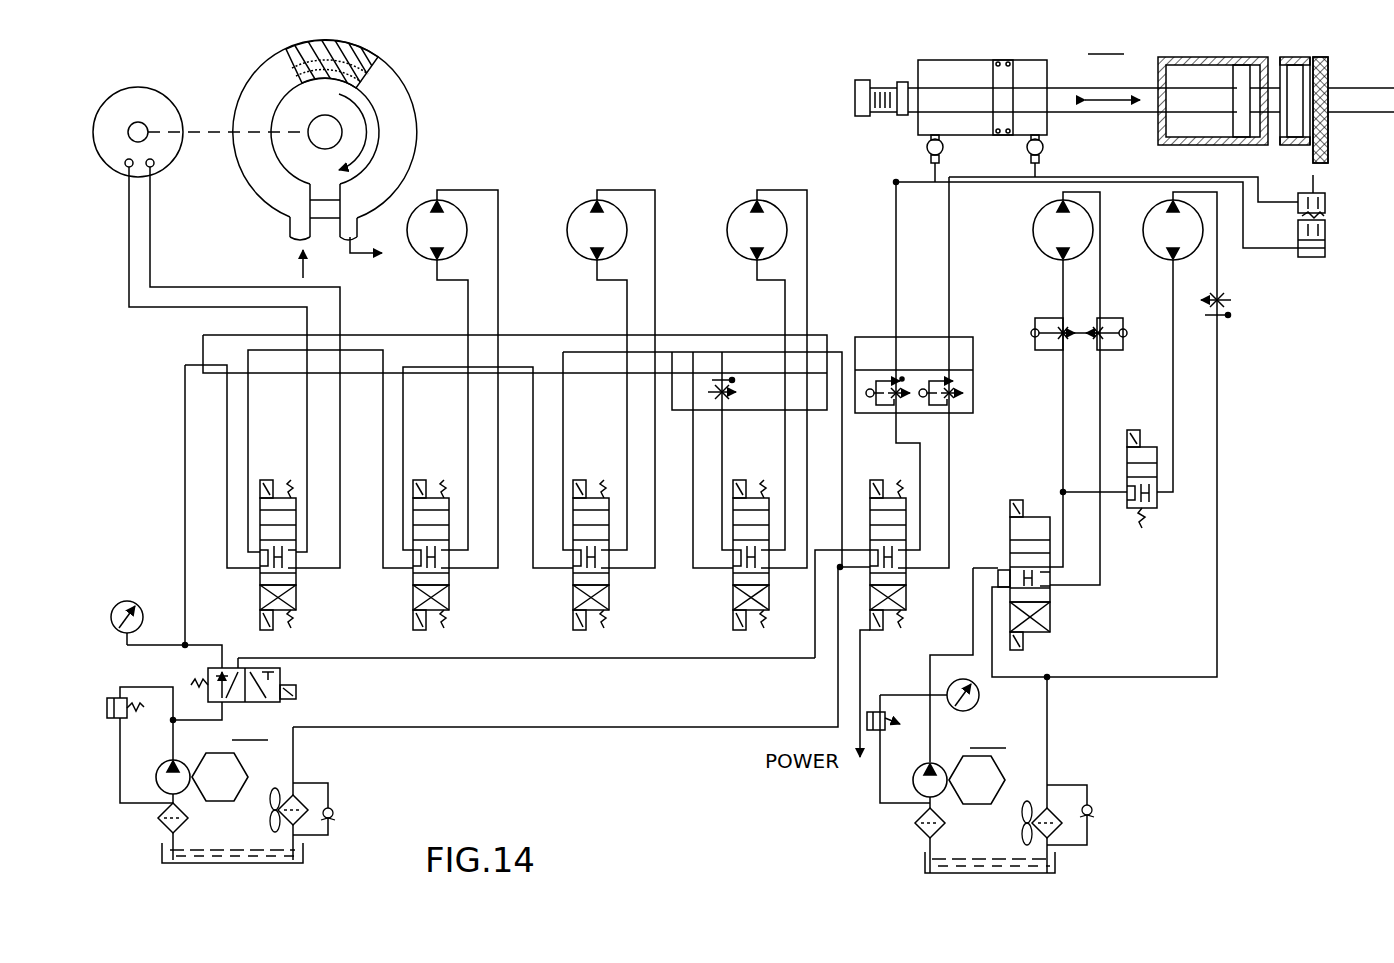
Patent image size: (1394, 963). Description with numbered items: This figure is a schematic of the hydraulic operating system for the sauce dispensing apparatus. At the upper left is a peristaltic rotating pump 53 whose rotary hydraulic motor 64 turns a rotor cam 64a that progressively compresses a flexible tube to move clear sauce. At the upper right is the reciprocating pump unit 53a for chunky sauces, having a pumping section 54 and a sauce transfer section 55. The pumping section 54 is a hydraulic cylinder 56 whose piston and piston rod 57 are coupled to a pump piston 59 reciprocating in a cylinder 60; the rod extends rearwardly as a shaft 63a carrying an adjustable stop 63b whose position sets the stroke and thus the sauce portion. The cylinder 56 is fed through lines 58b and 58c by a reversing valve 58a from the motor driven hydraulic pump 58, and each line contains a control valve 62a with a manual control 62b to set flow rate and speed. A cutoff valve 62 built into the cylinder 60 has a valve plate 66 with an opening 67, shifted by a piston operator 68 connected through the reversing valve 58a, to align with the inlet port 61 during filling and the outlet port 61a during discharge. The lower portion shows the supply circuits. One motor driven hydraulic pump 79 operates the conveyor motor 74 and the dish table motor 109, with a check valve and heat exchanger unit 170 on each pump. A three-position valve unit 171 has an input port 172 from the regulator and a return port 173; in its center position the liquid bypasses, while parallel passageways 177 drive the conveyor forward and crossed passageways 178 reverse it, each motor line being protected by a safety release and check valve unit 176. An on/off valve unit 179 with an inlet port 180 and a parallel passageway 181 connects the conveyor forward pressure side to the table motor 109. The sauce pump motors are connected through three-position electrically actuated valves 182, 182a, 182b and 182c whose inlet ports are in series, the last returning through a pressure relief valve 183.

The peristaltic rotating pump 53 is at (325, 136).
The pump unit 53a is at (1102, 137).
The pumping section 54 is at (1028, 58).
The sauce transfer section 55 is at (1170, 140).
The hydraulic cylinder 56 is at (1048, 70).
The piston and piston rod 57 is at (1057, 102).
The motor driven hydraulic pump 58 is at (557, 732).
The reversing valve 58a is at (903, 602).
The hydraulic line 58b is at (932, 158).
The hydraulic line 58c is at (1042, 164).
The pump piston 59 is at (1244, 138).
The cylinder 60 is at (1180, 57).
The sauce pump inlet port 61 is at (1267, 82).
The pump outlet port 61a is at (1293, 92).
The cutoff valve 62 is at (1318, 144).
The control valve 62a is at (926, 148).
The manual control 62b is at (945, 154).
The shaft 63a is at (864, 82).
The adjustable stop 63b is at (902, 81).
The rotary hydraulic motor 64 is at (117, 173).
The rotor cam 64a is at (296, 95).
The valve plate 66 is at (1322, 58).
The opening 67 is at (1326, 110).
The piston operator 68 is at (1296, 212).
The conveyor motor 74 is at (1040, 254).
The motor driven hydraulic pump 79 is at (910, 811).
The dish table motor 109 is at (1162, 258).
The check valve and heat exchanger unit 170 is at (303, 752).
The three-position hydraulic valve unit 171 is at (1024, 611).
The input port 172 is at (1005, 567).
The return port 173 is at (995, 586).
The safety release valve and parallel check valve unit 176 is at (1030, 346).
The parallel passageways 177 is at (1037, 532).
The crossed passageways 178 is at (1036, 620).
The on/off valve unit 179 is at (1164, 510).
The inlet port 180 is at (1140, 510).
The parallel passageway 181 is at (1152, 481).
The three-position electrically actuated valve 182 is at (297, 604).
The three-position electrically actuated valve 182a is at (450, 602).
The three-position electrically actuated valve 182b is at (608, 617).
The three-position electrically actuated valve 182c is at (733, 603).
The pressure relief valve 183 is at (734, 376).